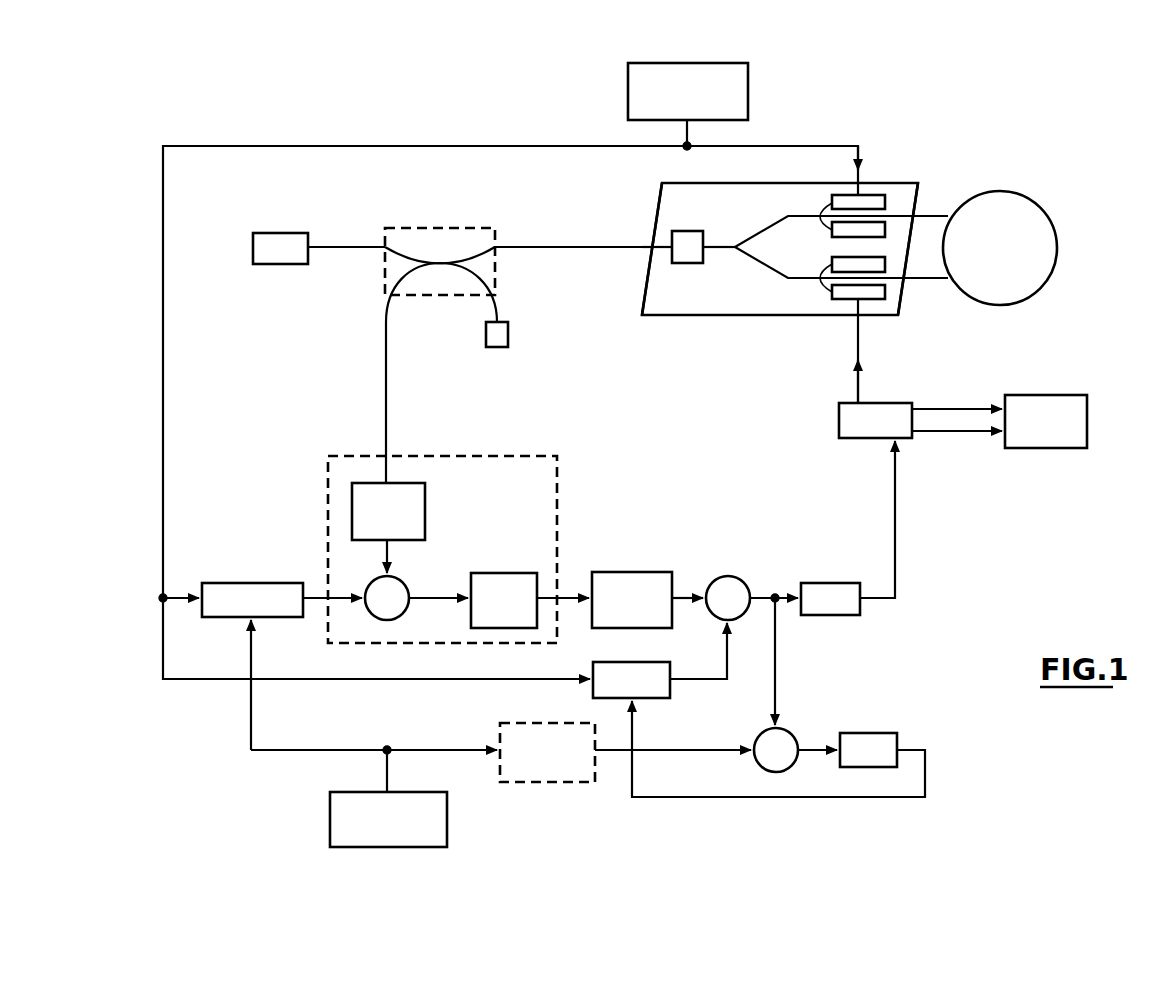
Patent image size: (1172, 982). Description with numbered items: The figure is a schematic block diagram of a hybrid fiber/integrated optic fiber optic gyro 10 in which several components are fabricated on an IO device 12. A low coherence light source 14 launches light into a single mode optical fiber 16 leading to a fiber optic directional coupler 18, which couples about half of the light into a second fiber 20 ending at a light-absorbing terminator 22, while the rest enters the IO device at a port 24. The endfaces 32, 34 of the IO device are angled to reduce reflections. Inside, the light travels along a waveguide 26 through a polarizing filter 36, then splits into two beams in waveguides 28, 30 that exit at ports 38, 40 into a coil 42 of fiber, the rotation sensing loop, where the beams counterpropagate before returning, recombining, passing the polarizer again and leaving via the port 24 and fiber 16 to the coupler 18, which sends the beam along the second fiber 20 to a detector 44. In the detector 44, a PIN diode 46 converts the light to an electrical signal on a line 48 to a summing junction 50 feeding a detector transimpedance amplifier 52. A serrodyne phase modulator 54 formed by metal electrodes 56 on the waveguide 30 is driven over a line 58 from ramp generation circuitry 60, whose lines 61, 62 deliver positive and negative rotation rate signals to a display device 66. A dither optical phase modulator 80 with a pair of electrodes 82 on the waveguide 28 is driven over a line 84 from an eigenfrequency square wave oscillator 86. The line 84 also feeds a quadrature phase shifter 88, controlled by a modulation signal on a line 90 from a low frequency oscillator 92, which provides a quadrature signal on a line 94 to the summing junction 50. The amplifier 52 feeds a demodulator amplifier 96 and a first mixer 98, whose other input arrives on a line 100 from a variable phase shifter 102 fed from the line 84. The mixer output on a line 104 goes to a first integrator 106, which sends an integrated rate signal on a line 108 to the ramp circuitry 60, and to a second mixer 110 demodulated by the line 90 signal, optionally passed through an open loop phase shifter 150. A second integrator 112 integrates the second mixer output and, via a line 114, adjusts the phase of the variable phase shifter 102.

The fiber optic gyro 10 is at (157, 142).
The IO device 12 is at (892, 162).
The low coherence light source 14 is at (282, 232).
The single mode optical fiber 16 is at (343, 250).
The fiber optic directional coupler 18 is at (441, 228).
The second fiber 20 is at (386, 322).
The light-absorbing terminator 22 is at (497, 347).
The port 24 is at (653, 243).
The waveguide 26 is at (663, 246).
The waveguide 28 is at (777, 222).
The waveguide 30 is at (768, 271).
The endface 32 is at (662, 183).
The endface 34 is at (912, 243).
The polarizing filter 36 is at (693, 264).
The port 38 is at (922, 210).
The port 40 is at (908, 283).
The coil 42 is at (1010, 192).
The detector 44 is at (350, 456).
The PIN diode 46 is at (425, 496).
The line 48 is at (385, 557).
The summing junction 50 is at (404, 583).
The detector transimpedance amplifier 52 is at (496, 573).
The phase modulator 54 is at (838, 318).
The metal electrodes 56 is at (820, 265).
The line 58 is at (862, 330).
The ramp generation circuitry 60 is at (845, 403).
The line 61 is at (960, 408).
The line 62 is at (940, 432).
The display device 66 is at (1045, 395).
The optical phase modulator 80 is at (840, 192).
The pair of electrodes 82 is at (820, 208).
The line 84 is at (858, 145).
The square wave oscillator 86 is at (628, 80).
The quadrature phase shifter 88 is at (255, 583).
The line 90 is at (268, 750).
The low frequency oscillator 92 is at (360, 792).
The line 94 is at (322, 598).
The demodulator amplifier 96 is at (645, 628).
The first mixer 98 is at (716, 580).
The line 100 is at (727, 655).
The variable phase shifter 102 is at (648, 698).
The line 104 is at (765, 598).
The first integrator 106 is at (825, 615).
The line 108 is at (895, 533).
The second mixer 110 is at (790, 768).
The second integrator 112 is at (858, 733).
The line 114 is at (845, 797).
The open loop phase shifter 150 is at (557, 782).